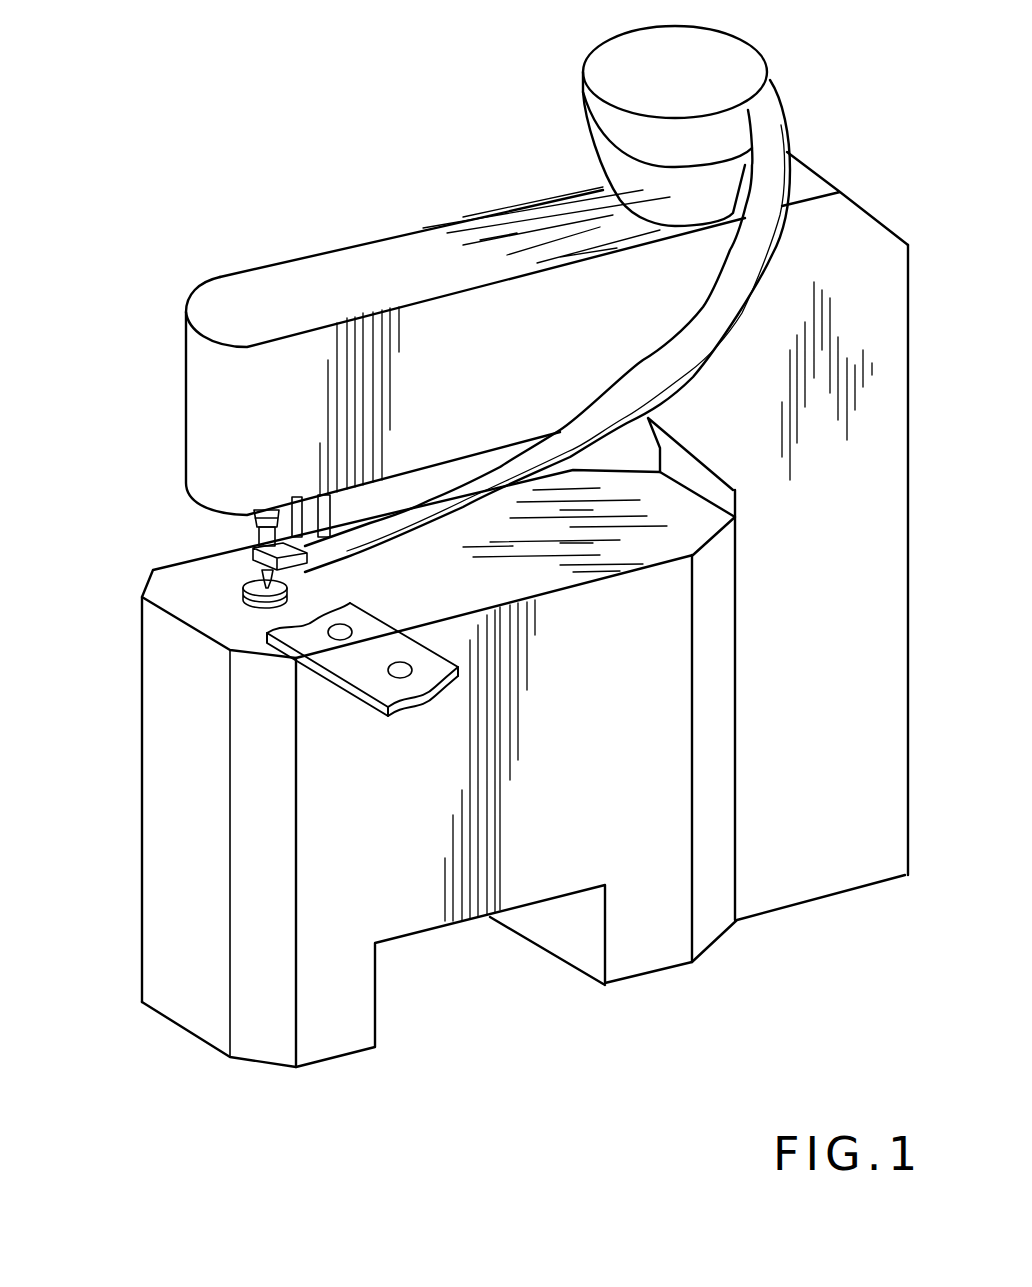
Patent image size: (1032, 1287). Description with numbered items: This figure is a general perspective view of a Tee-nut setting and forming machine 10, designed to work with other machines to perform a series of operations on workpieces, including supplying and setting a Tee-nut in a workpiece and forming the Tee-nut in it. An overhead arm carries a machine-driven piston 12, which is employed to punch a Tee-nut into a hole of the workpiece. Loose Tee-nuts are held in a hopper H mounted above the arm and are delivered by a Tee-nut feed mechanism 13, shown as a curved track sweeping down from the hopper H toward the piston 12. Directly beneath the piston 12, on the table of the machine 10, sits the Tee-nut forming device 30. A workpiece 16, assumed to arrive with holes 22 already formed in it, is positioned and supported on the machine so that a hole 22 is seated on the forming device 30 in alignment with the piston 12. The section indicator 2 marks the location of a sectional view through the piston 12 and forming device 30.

The hopper H is at (748, 44).
The machine 10 is at (138, 436).
The Tee-nut feed mechanism 13 is at (625, 360).
The machine-driven piston 12 is at (253, 533).
The Tee-nut forming device 30 is at (245, 588).
The section line 2- 2 is at (350, 576).
The workpiece 16 is at (368, 613).
The holes 22 is at (340, 634).